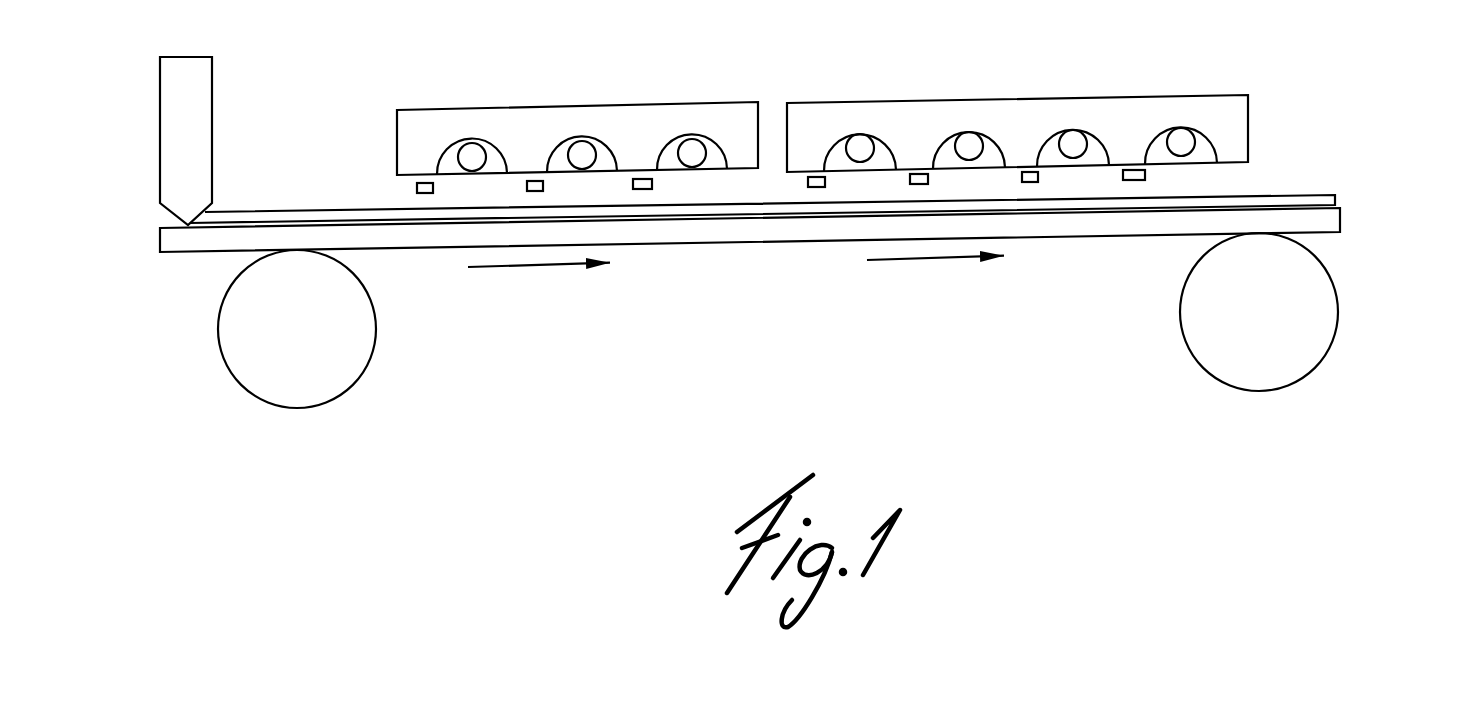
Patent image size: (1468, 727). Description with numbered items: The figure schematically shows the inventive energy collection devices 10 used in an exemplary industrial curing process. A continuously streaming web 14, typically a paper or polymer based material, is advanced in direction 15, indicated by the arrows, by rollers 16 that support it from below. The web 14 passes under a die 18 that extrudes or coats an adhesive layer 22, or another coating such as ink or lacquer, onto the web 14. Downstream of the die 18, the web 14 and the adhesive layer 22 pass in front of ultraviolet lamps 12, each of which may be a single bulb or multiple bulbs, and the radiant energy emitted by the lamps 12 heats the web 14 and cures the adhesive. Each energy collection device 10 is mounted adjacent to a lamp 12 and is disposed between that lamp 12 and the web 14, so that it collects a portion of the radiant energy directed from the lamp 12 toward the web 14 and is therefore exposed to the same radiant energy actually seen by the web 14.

The energy collection device 10 is at (436, 189).
The ultraviolet lamp 12 is at (565, 95).
The web 14 is at (1346, 223).
The direction 15 is at (533, 268).
The rollers 16 is at (380, 343).
The die 18 is at (217, 72).
The adhesive layer 22 is at (1346, 194).